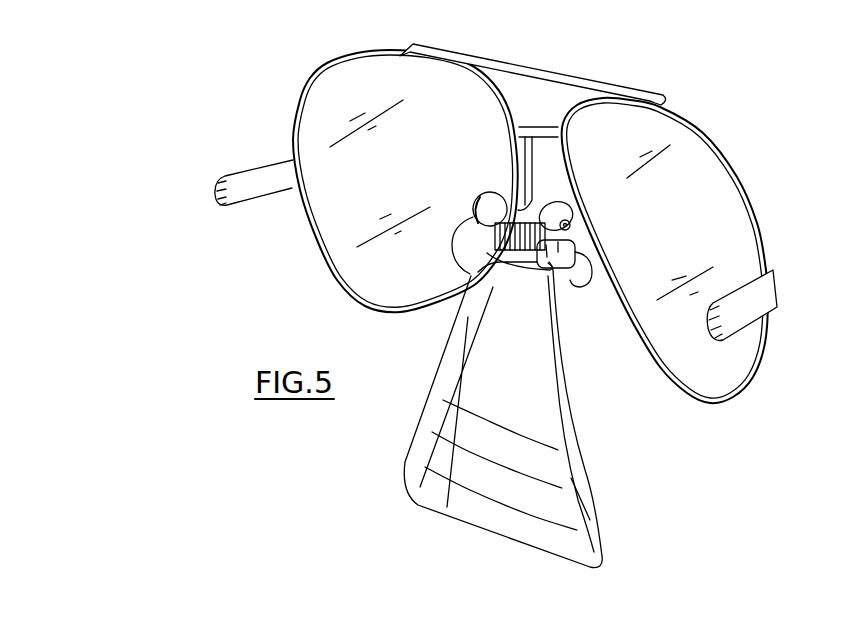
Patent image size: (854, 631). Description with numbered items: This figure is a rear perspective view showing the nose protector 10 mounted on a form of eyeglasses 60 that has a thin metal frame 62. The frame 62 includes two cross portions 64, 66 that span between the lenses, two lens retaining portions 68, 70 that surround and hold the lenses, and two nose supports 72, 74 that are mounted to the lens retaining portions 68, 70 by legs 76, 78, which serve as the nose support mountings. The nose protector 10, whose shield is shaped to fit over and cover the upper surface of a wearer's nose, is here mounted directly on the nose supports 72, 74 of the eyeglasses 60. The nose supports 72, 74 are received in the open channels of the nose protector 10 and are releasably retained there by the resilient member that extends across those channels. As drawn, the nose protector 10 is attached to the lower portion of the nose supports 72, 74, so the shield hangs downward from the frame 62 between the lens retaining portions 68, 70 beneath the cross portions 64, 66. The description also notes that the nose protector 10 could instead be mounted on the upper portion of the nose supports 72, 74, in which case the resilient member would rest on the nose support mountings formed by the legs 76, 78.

The nose protector 10 is at (632, 497).
The eyeglasses 60 is at (683, 245).
The thin metal frame 62 is at (767, 228).
The cross portion 64 is at (499, 62).
The cross portion 66 is at (530, 130).
The lens retaining portion 68 is at (334, 66).
The lens retaining portion 70 is at (748, 196).
The nose support 72 is at (487, 193).
The nose support 74 is at (565, 213).
The leg 76 is at (520, 208).
The leg 78 is at (577, 223).